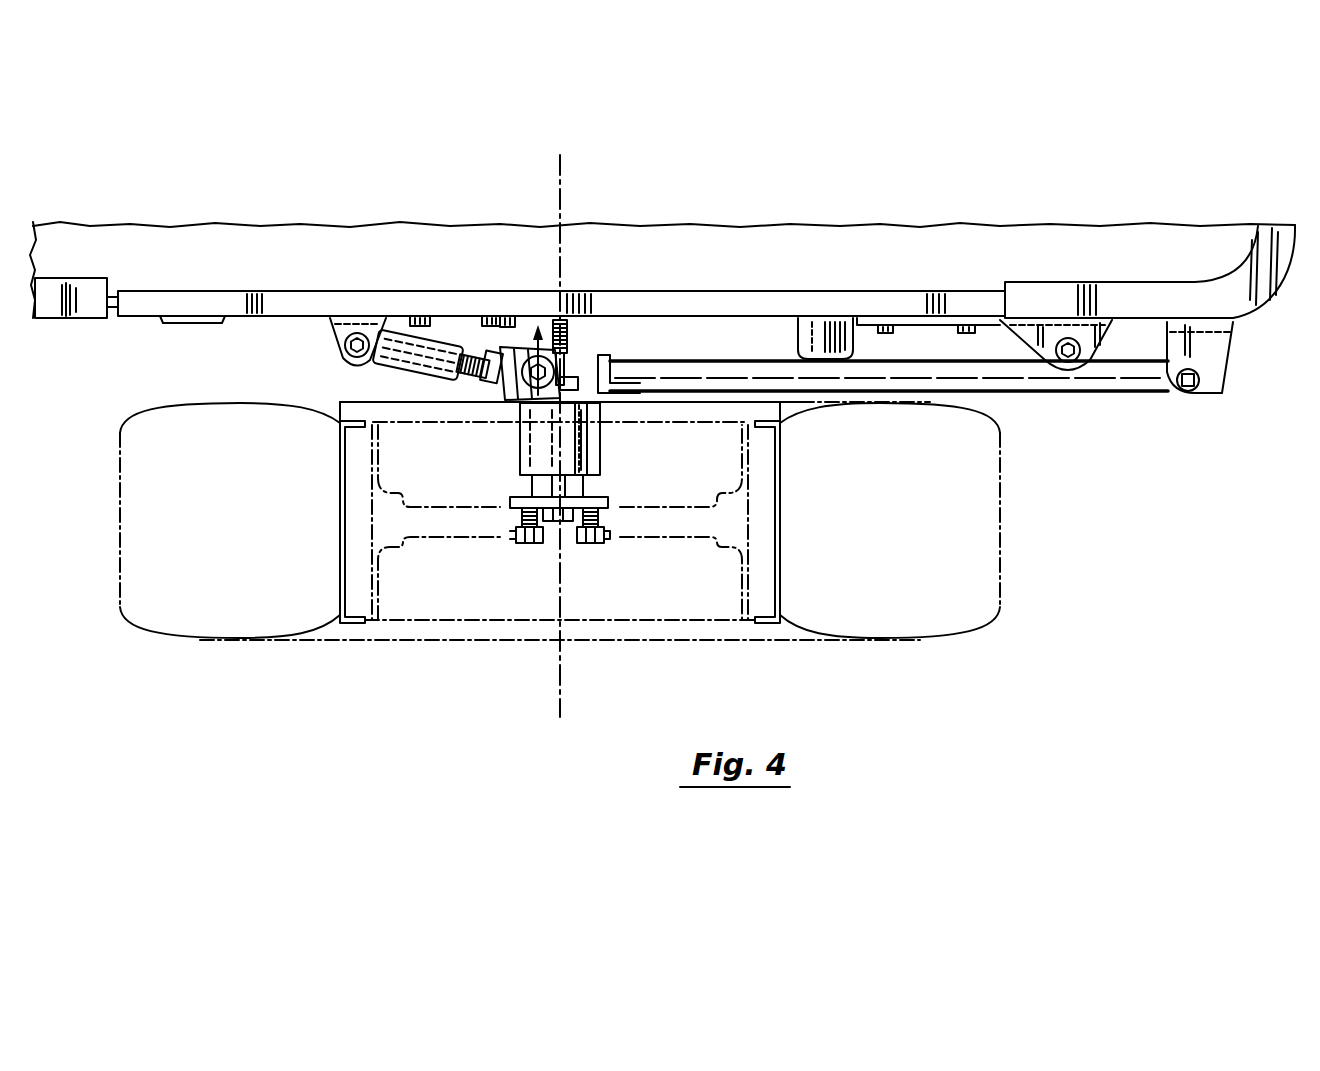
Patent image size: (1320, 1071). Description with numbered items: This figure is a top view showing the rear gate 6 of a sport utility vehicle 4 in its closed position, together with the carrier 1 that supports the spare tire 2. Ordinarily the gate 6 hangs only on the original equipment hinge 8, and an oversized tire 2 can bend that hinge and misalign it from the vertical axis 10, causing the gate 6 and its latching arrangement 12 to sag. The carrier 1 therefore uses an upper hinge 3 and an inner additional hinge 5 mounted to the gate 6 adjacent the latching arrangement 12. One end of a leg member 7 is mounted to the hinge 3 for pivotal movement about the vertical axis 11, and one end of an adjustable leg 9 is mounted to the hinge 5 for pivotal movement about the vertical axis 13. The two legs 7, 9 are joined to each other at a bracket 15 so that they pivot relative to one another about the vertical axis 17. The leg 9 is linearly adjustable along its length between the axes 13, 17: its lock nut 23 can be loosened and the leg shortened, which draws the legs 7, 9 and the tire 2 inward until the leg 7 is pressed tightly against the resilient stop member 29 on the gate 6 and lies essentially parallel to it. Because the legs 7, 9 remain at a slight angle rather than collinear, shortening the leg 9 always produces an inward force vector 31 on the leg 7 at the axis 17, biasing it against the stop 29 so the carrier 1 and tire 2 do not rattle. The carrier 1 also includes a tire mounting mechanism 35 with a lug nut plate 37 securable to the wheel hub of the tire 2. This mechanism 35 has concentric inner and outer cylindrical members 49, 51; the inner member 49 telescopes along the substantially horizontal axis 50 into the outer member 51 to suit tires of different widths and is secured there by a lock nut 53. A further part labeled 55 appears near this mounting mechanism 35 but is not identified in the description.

The carrier 1 is at (1075, 465).
The spare tire 2 is at (200, 652).
The upper hinge 3 is at (1222, 350).
The sport utility vehicle 4 is at (72, 270).
The inner additional hinge 5 is at (330, 334).
The rear gate 6 is at (654, 305).
The leg member 7 is at (908, 352).
The original equipment hinge 8 is at (1050, 335).
The adjustable leg 9 is at (398, 330).
The vertical axis 10 is at (1069, 345).
The vertical axis 11 is at (1193, 386).
The latching arrangement 12 is at (185, 324).
The vertical axis 13 is at (356, 334).
The bracket 15 is at (497, 392).
The vertical axis 17 is at (566, 366).
The lock nut 23 is at (491, 324).
The resilient stop member 29 is at (805, 337).
The inward force vector 31 is at (553, 320).
The tire mounting mechanism 35 is at (508, 447).
The lug nut plate 37 is at (606, 500).
The inner cylindrical member 49 is at (535, 483).
The horizontal axis 50 is at (562, 188).
The outer cylindrical member 51 is at (590, 452).
The lock nut 53 is at (612, 395).
The kingpin nut 55 is at (566, 524).